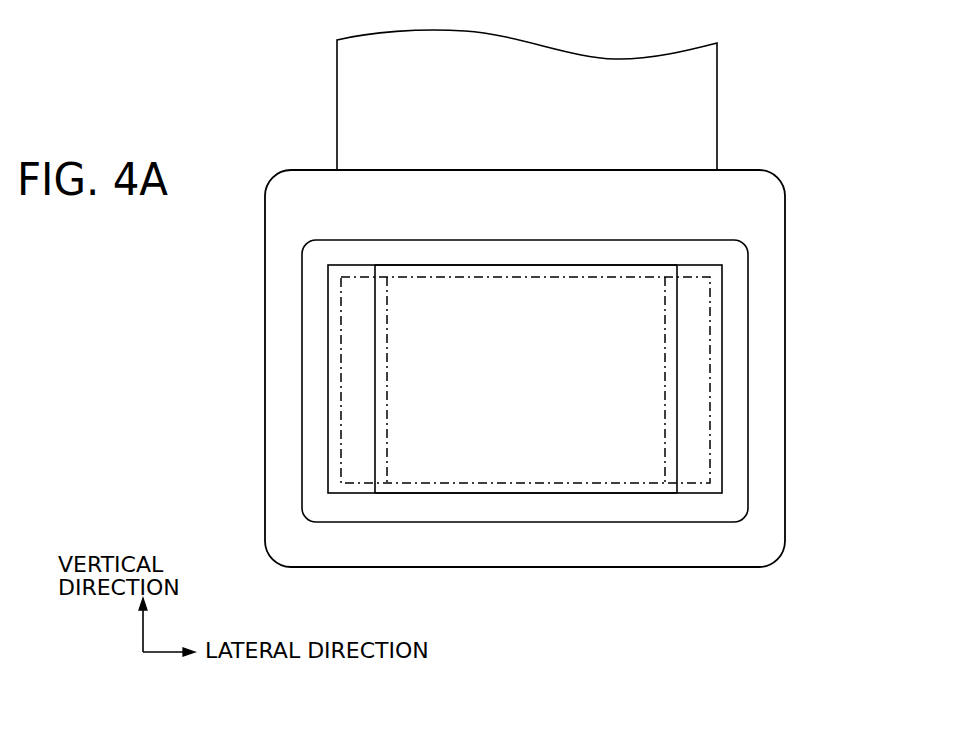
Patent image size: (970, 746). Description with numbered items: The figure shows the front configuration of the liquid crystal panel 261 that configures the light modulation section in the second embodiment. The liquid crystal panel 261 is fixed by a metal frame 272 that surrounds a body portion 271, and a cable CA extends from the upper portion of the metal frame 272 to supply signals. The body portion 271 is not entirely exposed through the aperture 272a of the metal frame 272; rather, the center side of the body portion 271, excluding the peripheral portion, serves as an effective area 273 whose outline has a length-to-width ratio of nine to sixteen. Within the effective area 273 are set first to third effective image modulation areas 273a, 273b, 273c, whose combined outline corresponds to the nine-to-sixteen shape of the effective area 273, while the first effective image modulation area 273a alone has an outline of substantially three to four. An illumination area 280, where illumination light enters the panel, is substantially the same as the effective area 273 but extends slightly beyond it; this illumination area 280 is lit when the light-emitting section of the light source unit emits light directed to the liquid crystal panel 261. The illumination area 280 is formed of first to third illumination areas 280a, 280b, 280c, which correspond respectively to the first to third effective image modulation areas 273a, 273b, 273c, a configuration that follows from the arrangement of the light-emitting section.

The cable CA is at (347, 137).
The liquid crystal panel 261 is at (760, 148).
The body portion 271 is at (312, 472).
The metal frame 272 is at (460, 381).
The aperture 272a is at (302, 368).
The effective area 273 is at (521, 467).
The first effective image modulation area 273a is at (527, 483).
The second effective image modulation area 273b is at (350, 483).
The third effective image modulation area 273c is at (632, 443).
The illumination area 280 is at (525, 279).
The first illumination area 280a is at (527, 265).
The second illumination area 280b is at (355, 265).
The third illumination area 280c is at (634, 304).